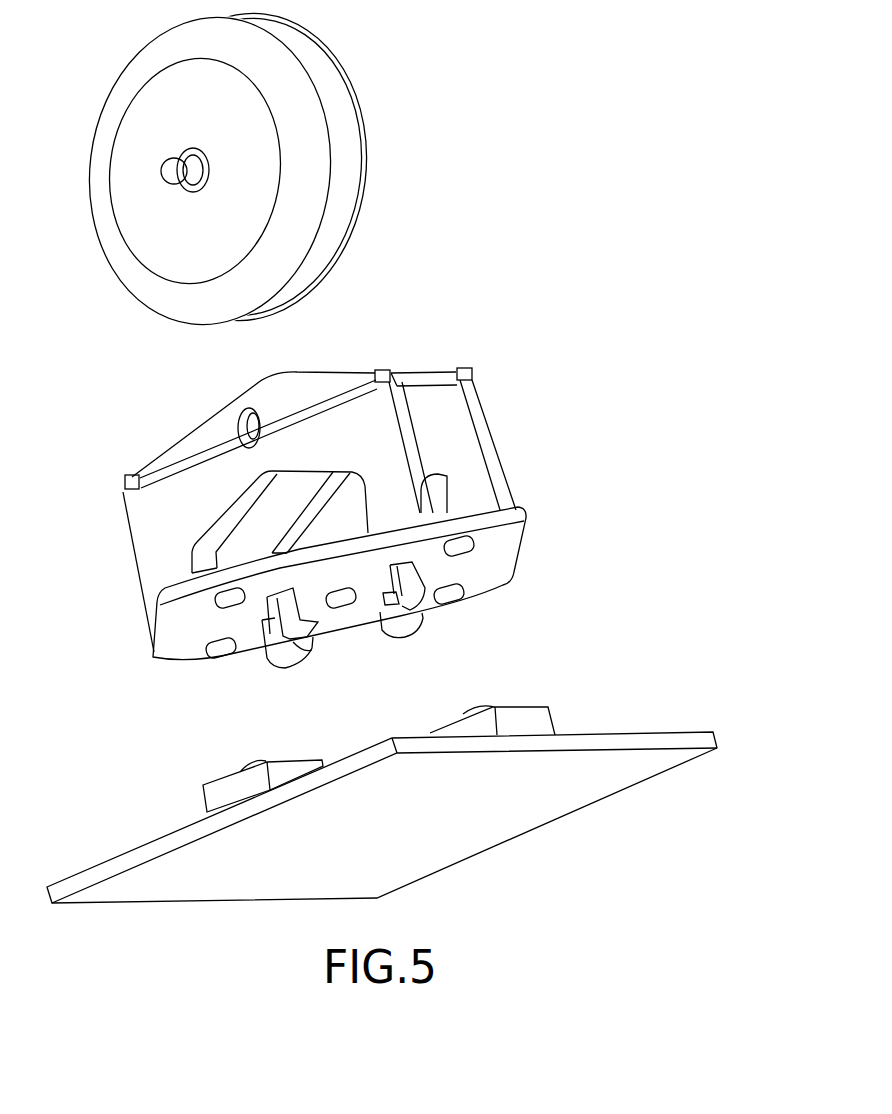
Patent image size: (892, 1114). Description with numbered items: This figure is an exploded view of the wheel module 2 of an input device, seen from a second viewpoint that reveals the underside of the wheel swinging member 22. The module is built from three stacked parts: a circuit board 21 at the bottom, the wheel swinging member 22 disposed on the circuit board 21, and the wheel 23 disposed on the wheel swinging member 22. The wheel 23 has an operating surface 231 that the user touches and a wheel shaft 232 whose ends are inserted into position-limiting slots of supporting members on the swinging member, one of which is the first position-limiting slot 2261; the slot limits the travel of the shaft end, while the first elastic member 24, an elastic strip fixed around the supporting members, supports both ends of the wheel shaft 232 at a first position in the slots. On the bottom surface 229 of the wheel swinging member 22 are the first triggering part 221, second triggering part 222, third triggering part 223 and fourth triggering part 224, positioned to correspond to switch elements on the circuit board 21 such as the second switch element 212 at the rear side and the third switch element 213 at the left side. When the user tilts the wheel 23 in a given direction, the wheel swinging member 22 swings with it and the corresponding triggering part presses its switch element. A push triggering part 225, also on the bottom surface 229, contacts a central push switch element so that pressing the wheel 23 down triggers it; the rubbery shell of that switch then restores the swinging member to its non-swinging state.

The wheel module 2 is at (534, 78).
The circuit board 21 is at (382, 784).
The second switch element 212 is at (520, 717).
The third switch element 213 is at (222, 790).
The wheel swinging member 22 is at (354, 522).
The first triggering part 221 is at (220, 645).
The second triggering part 222 is at (460, 540).
The third triggering part 223 is at (217, 597).
The fourth triggering part 224 is at (453, 595).
The push triggering part 225 is at (342, 598).
The first position-limiting slot 2261 is at (251, 410).
The bottom surface 229 is at (503, 555).
The wheel 23 is at (233, 169).
The operating surface 231 is at (343, 190).
The wheel shaft 232 is at (171, 172).
The first elastic member 24 is at (300, 412).